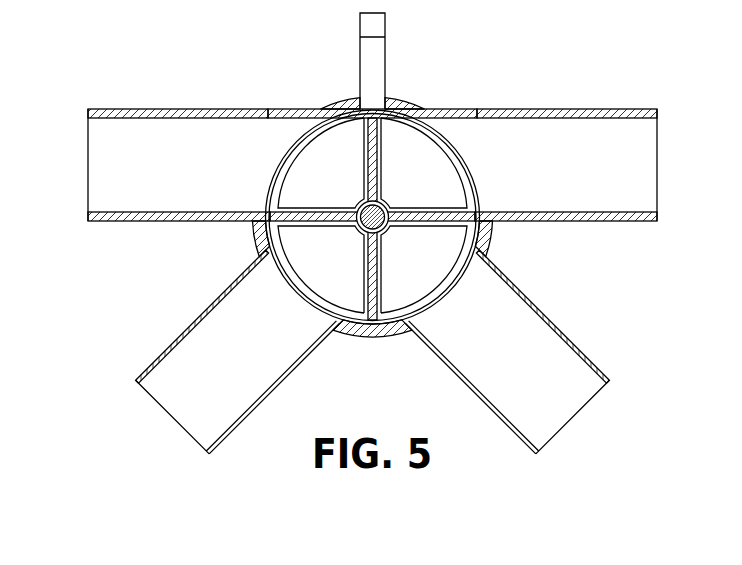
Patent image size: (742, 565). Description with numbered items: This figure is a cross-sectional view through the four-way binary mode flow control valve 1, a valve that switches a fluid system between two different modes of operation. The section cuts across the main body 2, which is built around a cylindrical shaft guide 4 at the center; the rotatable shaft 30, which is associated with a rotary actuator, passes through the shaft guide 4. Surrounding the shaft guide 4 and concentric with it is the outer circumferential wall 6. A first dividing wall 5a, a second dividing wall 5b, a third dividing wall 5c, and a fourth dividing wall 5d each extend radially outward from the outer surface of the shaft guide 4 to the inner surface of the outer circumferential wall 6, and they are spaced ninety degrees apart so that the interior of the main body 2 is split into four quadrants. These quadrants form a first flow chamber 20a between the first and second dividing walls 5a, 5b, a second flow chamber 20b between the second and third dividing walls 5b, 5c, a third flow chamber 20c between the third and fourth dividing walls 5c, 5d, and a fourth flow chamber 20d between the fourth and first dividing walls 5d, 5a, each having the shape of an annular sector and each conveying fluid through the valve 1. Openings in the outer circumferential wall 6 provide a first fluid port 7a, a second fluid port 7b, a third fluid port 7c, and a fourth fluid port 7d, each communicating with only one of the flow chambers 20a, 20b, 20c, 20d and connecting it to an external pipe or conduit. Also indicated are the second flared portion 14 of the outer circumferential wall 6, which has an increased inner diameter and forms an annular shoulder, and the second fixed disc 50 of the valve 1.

The four-way binary mode flow control valve 1 is at (274, 76).
The main body 2 is at (259, 234).
The shaft guide 4 is at (383, 239).
The first dividing wall 5a is at (320, 212).
The second dividing wall 5b is at (378, 143).
The third dividing wall 5c is at (441, 212).
The fourth dividing wall 5d is at (368, 283).
The outer circumferential wall 6 is at (362, 338).
The first fluid port 7a is at (103, 160).
The second fluid port 7b is at (178, 418).
The third fluid port 7c is at (562, 410).
The fourth fluid port 7d is at (640, 160).
The second flared portion 14 is at (490, 237).
The first flow chamber 20a is at (341, 156).
The second flow chamber 20b is at (449, 150).
The third flow chamber 20c is at (421, 286).
The fourth flow chamber 20d is at (292, 260).
The rotatable shaft 30 is at (386, 227).
The second fixed disc 50 is at (285, 160).